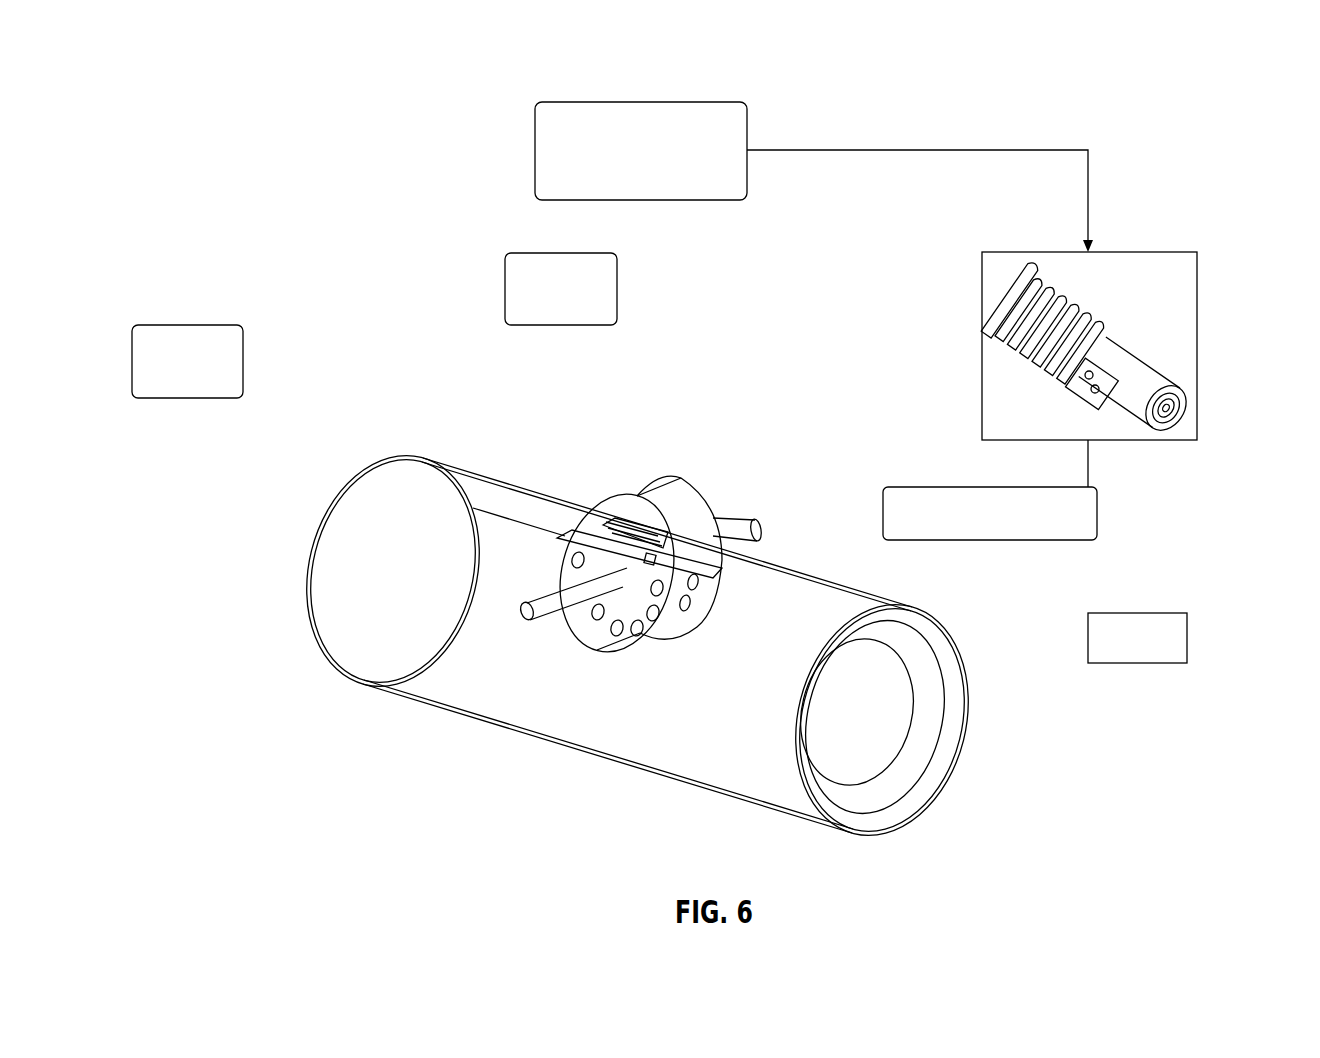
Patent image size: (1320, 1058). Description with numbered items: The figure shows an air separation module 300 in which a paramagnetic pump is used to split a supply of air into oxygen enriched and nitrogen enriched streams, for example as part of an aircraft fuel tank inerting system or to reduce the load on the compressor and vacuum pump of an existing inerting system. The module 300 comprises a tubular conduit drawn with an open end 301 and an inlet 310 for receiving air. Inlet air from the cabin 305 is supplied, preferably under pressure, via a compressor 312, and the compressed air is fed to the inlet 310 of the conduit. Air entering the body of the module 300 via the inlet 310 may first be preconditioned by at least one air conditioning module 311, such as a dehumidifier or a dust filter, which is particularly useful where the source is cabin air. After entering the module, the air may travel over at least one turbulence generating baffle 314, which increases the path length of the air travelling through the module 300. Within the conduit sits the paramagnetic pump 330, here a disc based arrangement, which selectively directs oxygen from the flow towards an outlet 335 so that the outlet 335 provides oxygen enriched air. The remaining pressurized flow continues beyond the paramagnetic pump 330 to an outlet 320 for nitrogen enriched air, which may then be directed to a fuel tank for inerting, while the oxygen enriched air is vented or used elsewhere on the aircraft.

The air separation module 300 is at (540, 706).
The housing end 301 is at (938, 615).
The inlet air from cabin 305 is at (720, 102).
The inlet 310 is at (985, 579).
The air conditioning module 311 is at (1137, 638).
The compressor 312 is at (1197, 352).
The turbulence generating baffle 314 is at (863, 807).
The outlet 320 is at (264, 447).
The paramagnetic pump 330 is at (627, 478).
The outlet 335 is at (632, 395).